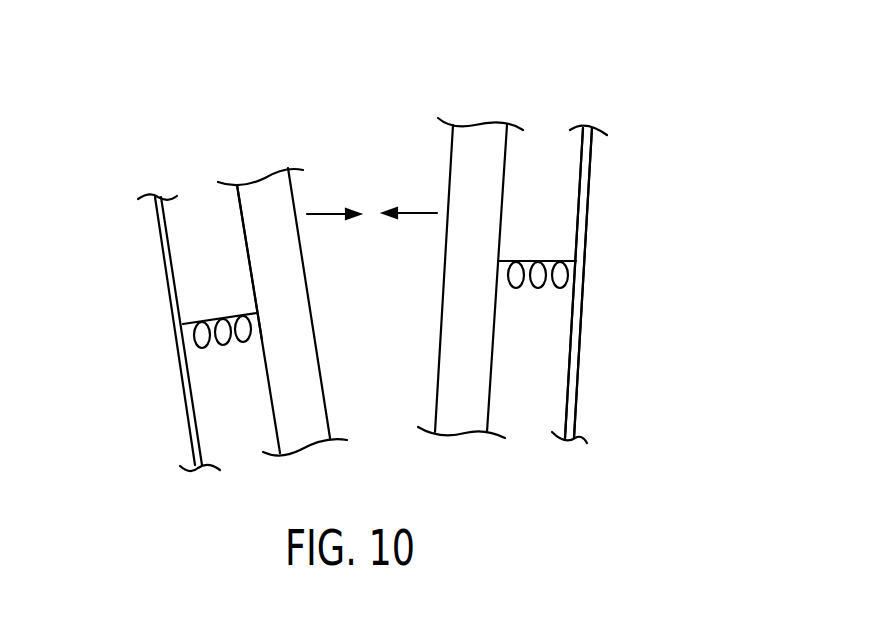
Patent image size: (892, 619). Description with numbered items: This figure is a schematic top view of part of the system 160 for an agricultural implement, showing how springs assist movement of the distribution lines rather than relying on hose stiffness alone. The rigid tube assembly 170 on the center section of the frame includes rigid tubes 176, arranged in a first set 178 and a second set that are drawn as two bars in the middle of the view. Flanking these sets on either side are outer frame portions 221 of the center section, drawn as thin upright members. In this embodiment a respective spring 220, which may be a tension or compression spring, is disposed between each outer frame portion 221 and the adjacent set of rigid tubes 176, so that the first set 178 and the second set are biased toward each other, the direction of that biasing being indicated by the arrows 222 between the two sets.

The system 160 is at (603, 118).
The rigid tube assembly 170 is at (572, 80).
The rigid tube 176 is at (267, 390).
The first set of rigid tubes 178 is at (243, 227).
The spring 220 is at (232, 314).
The outer frame portion 221 is at (180, 364).
The arrows 222 is at (420, 213).